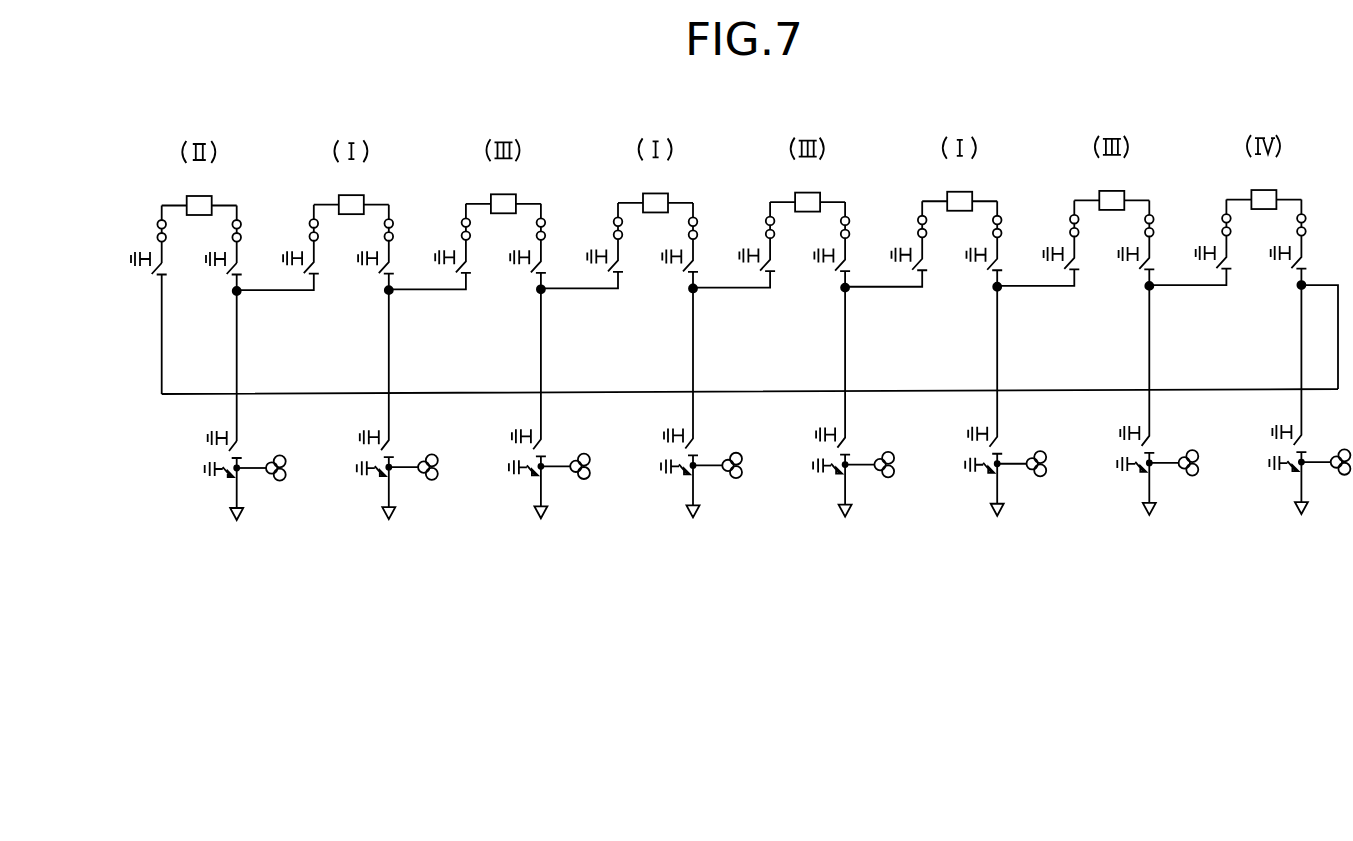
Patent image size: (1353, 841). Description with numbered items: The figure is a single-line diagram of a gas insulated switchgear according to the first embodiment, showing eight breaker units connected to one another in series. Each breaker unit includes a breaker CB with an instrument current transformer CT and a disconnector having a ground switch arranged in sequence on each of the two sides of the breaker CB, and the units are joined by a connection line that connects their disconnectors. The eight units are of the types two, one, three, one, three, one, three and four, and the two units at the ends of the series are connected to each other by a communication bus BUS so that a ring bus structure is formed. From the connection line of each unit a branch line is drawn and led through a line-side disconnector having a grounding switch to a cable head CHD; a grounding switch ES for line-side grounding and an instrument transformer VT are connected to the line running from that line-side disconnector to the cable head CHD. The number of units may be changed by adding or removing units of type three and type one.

The breaker CB is at (195, 192).
The instrument current transformer CT is at (181, 235).
The communication bus BUS is at (721, 345).
The grounding switch ES is at (200, 468).
The instrument transformer VT is at (284, 468).
The cable head CHD is at (267, 514).